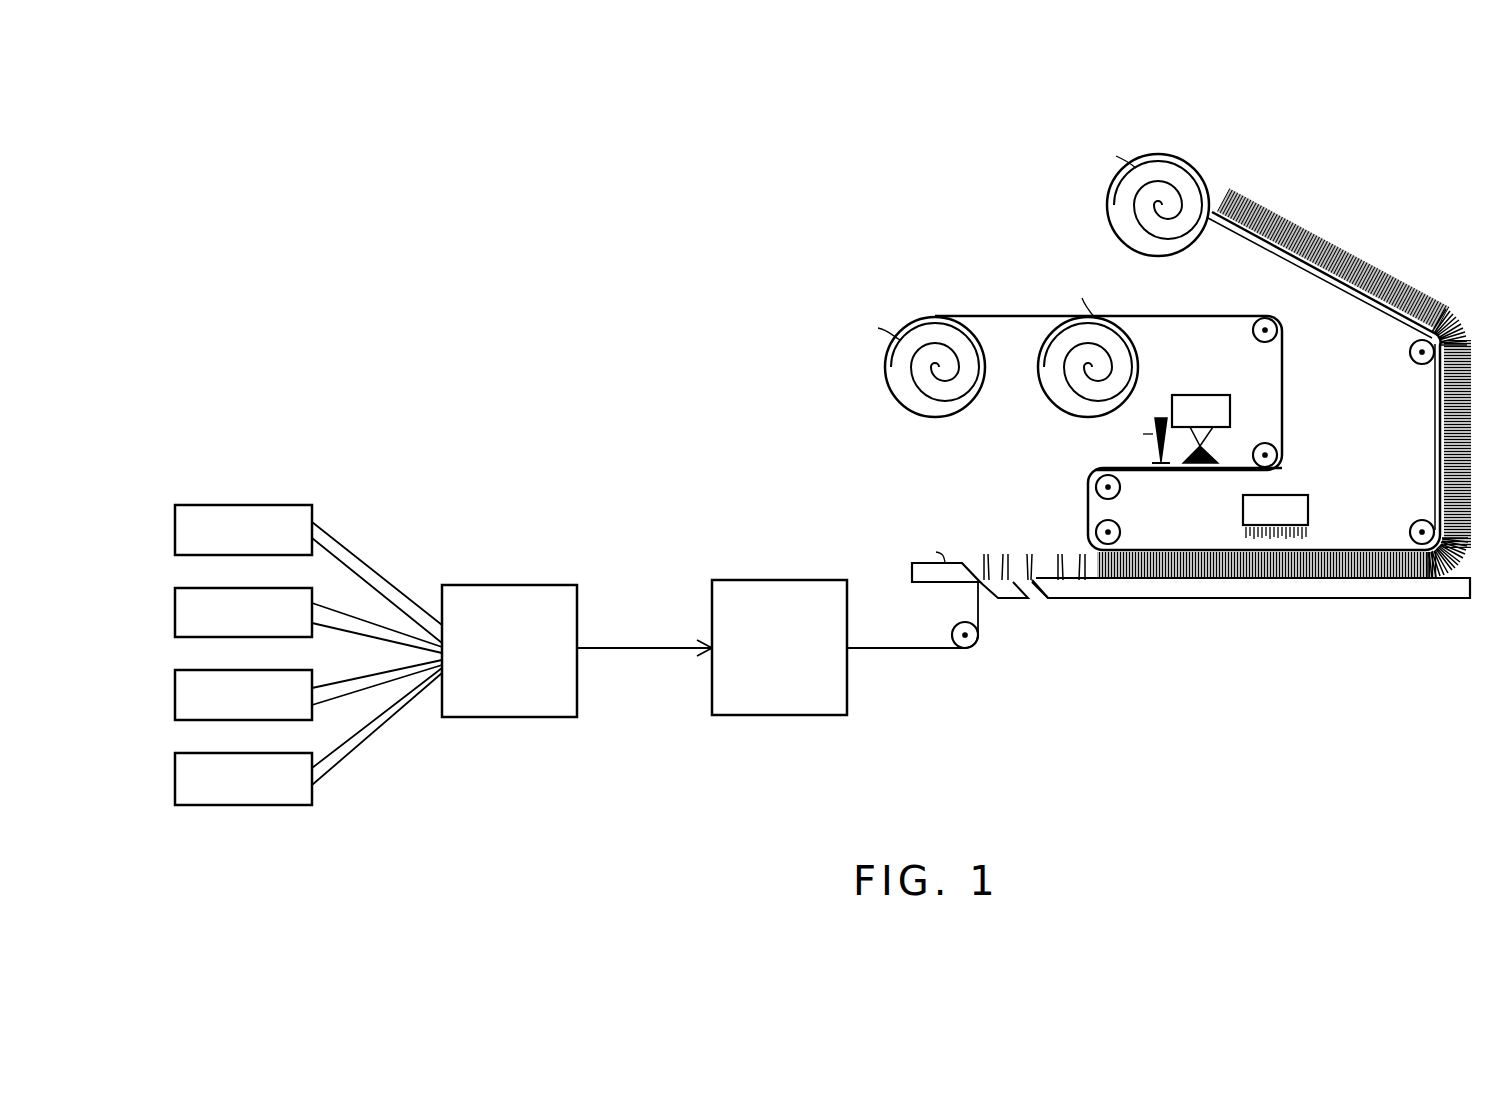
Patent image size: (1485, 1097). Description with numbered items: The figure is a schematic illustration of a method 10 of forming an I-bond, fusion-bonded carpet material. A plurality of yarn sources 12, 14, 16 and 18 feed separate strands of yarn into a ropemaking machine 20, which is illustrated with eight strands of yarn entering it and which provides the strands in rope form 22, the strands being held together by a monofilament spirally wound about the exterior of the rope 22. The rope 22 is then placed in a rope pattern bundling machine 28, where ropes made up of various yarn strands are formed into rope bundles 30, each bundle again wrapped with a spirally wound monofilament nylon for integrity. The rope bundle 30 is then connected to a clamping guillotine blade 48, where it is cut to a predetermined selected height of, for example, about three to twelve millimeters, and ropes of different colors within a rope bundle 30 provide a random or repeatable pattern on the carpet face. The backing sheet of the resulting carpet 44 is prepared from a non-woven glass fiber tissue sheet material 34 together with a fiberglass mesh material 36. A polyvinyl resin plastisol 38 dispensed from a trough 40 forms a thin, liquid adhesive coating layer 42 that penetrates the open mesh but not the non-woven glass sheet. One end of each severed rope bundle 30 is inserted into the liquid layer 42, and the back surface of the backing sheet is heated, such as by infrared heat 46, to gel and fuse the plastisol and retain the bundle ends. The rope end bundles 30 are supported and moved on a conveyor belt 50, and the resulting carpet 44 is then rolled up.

The method 10 is at (557, 403).
The yarn source 12 is at (176, 529).
The yarn source 14 is at (176, 613).
The yarn source 16 is at (176, 696).
The yarn source 18 is at (176, 780).
The ropemaking machine 20 is at (540, 717).
The rope 22 is at (680, 650).
The rope pattern bundling machine 28 is at (775, 716).
The rope bundle 30 is at (916, 649).
The non-woven glass fiber tissue sheet material 34 is at (904, 407).
The fiberglass mesh material 36 is at (1066, 411).
The polyvinyl resin plastisol 38 is at (1215, 455).
The trough 40 is at (1139, 429).
The adhesive coating layer 42 is at (1087, 488).
The carpet 44 is at (1193, 163).
The infrared heat 46 is at (1243, 512).
The clamping guillotine blade 48 is at (960, 583).
The conveyor belt 50 is at (1308, 598).